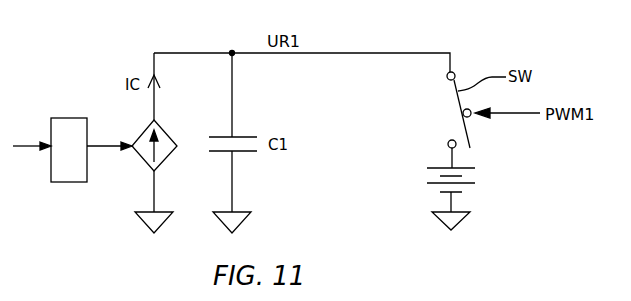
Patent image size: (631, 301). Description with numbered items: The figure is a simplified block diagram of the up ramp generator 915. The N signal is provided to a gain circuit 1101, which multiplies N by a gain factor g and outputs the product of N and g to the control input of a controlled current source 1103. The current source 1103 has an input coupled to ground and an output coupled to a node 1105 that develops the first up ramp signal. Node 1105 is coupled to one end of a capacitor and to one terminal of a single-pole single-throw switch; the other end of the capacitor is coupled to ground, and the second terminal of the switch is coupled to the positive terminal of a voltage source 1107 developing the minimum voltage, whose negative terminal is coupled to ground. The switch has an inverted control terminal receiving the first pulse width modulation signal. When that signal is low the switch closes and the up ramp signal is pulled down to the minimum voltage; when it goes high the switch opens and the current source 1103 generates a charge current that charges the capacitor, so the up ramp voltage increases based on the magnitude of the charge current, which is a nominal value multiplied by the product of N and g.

The gain circuit 1101 is at (63, 118).
The controlled current source 1103 is at (164, 128).
The node 1105 is at (231, 52).
The voltage source 1107 is at (431, 168).
The up ramp generator 915 is at (321, 182).